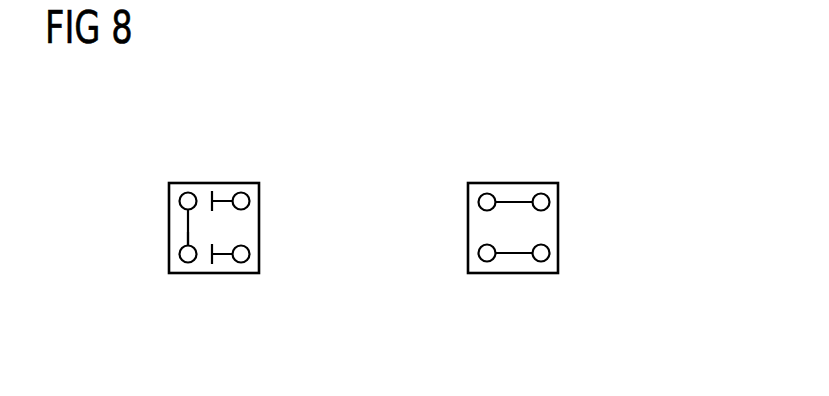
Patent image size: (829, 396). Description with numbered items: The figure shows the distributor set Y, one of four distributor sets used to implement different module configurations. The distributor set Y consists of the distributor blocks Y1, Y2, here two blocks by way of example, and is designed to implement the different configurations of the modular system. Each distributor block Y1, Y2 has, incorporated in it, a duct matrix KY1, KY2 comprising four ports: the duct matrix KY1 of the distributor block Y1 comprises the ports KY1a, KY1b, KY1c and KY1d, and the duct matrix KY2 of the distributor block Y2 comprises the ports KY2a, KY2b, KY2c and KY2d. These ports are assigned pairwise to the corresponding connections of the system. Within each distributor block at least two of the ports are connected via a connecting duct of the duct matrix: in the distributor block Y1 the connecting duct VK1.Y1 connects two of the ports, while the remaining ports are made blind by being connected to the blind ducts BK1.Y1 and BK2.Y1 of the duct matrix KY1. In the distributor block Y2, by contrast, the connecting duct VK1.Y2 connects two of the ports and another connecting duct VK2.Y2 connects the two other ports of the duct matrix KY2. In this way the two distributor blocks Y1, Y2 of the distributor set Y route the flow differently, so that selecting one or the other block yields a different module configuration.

The distributor set Y is at (248, 86).
The distributor block Y1 is at (169, 197).
The distributor block Y2 is at (530, 183).
The duct matrix KY1 is at (168, 229).
The duct matrix KY2 is at (538, 280).
The connecting duct VK1.Y1 is at (186, 239).
The connecting duct VK1.Y2 is at (507, 202).
The connecting duct VK2.Y2 is at (507, 253).
The port KY1a is at (188, 192).
The port KY1b is at (188, 262).
The port KY1c is at (259, 253).
The port KY1d is at (259, 201).
The port KY2a is at (468, 202).
The port KY2b is at (468, 253).
The port KY2c is at (558, 253).
The port KY2d is at (558, 202).
The blind duct BK1.Y1 is at (222, 262).
The blind duct BK2.Y1 is at (224, 190).